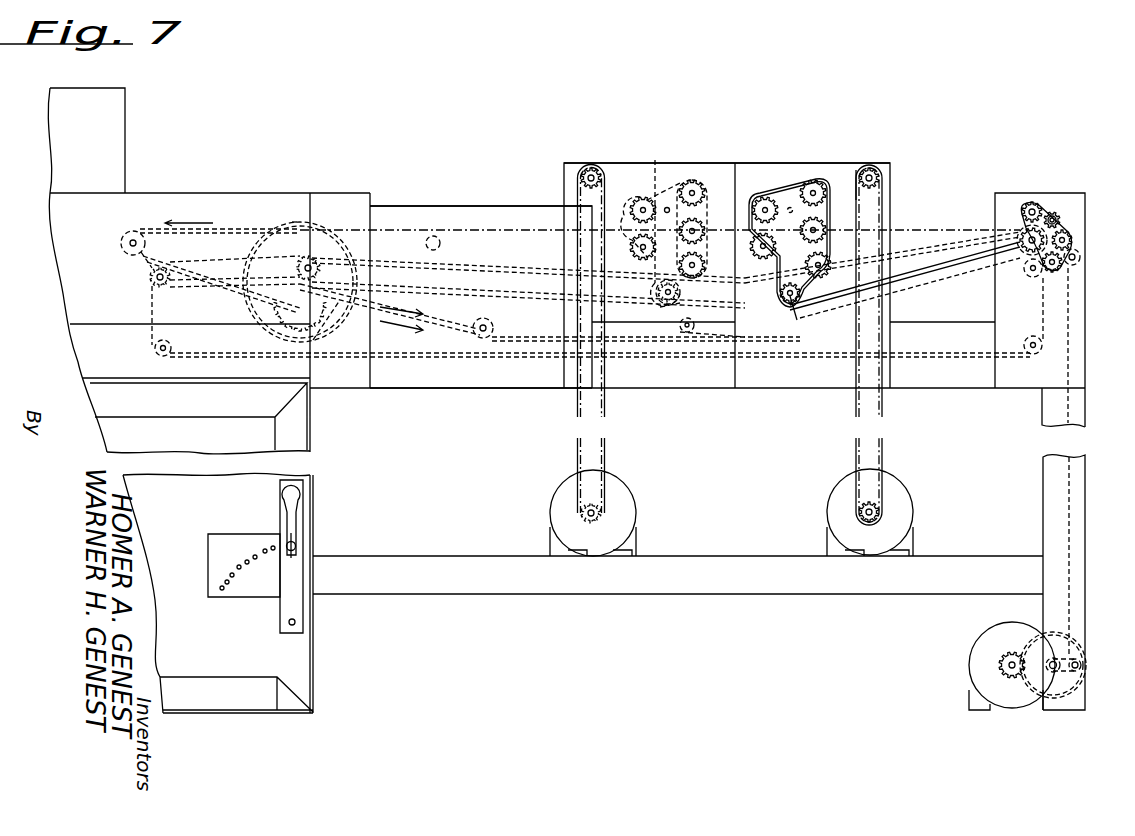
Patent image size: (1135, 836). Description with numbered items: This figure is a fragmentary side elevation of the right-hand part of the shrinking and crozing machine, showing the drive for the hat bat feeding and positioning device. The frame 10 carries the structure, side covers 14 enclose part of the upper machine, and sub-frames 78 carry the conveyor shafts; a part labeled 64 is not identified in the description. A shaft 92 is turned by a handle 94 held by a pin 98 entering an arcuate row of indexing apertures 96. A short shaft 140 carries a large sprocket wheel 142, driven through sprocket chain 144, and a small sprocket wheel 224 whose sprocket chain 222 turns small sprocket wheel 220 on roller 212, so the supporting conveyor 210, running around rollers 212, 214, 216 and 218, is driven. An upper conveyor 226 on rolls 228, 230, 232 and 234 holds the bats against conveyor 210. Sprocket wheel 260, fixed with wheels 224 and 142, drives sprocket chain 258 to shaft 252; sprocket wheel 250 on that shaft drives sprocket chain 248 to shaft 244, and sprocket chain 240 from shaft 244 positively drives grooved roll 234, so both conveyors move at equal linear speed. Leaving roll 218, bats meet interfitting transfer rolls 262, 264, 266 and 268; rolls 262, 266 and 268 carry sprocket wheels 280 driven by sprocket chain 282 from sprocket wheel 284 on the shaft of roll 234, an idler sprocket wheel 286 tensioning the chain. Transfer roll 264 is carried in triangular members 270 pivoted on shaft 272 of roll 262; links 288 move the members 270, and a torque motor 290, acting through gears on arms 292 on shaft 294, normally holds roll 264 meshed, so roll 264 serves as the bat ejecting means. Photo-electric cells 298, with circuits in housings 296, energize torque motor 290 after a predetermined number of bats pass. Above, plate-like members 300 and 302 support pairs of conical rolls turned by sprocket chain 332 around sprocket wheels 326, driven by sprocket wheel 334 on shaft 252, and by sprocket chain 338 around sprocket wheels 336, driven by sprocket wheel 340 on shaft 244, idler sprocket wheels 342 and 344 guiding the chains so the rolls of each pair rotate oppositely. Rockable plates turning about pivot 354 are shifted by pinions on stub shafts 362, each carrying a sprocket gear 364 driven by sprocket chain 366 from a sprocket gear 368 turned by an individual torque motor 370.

The frame 10 is at (305, 677).
The side covers 14 is at (50, 200).
The upper housing 64 is at (50, 100).
The sub-frame 78 is at (1078, 350).
The shaft 92 is at (296, 622).
The handle 94 is at (297, 502).
The indexing apertures 96 is at (230, 592).
The pin 98 is at (296, 546).
The short shaft 140 is at (306, 262).
The large sprocket wheel 142 is at (292, 220).
The sprocket chain 144 is at (313, 333).
The supporting conveyor 210 is at (418, 358).
The roller 212 is at (150, 286).
The roller 214 is at (155, 349).
The roller 216 is at (1023, 345).
The roller 218 is at (1024, 272).
The small sprocket wheel 220 is at (148, 277).
The sprocket chain 222 is at (207, 258).
The small sprocket wheel 224 is at (362, 307).
The conveyor 226 is at (480, 228).
The roll 228 is at (126, 232).
The roll 230 is at (476, 323).
The roll 232 is at (680, 332).
The roll 234 is at (1000, 229).
The sprocket chain 240 is at (900, 250).
The shaft 244 is at (797, 320).
The sprocket chain 248 is at (692, 331).
The sprocket wheel 250 is at (660, 307).
The short horizontally mounted shaft 252 is at (680, 293).
The sprocket chain 258 is at (455, 259).
The sprocket wheel 260 is at (314, 262).
The transfer roll 262 is at (1058, 272).
The transfer roll 264 is at (1070, 235).
The transfer roll 266 is at (1060, 215).
The transfer roll 268 is at (1028, 202).
The members 270 is at (1079, 254).
The shaft 272 is at (1063, 264).
The sprocket wheels 280 is at (1062, 214).
The sprocket chain 282 is at (1048, 203).
The sprocket wheel 284 is at (1022, 232).
The idler sprocket wheel 286 is at (1078, 250).
The links 288 is at (1078, 397).
The torque motor 290 is at (982, 647).
The arms 292 is at (1078, 648).
The shaft 294 is at (1060, 672).
The housings 296 is at (452, 204).
The photo-electric cells 298 is at (434, 236).
The plate-like member 300 is at (743, 162).
The plate-like member 302 is at (603, 162).
The sprocket wheels 326 is at (646, 217).
The sprocket chain 332 is at (638, 212).
The sprocket wheel 334 is at (658, 293).
The sprocket wheels 336 is at (760, 210).
The sprocket chain 338 is at (812, 182).
The sprocket wheel 340 is at (781, 293).
The idler sprocket wheel 342 is at (710, 200).
The idler sprocket wheel 344 is at (855, 176).
The pivot 354 is at (667, 207).
The stub shafts 362 is at (584, 179).
The sprocket gear 364 is at (577, 195).
The sprocket chain 366 is at (576, 450).
The sprocket gear 368 is at (580, 512).
The torque motor 370 is at (628, 500).